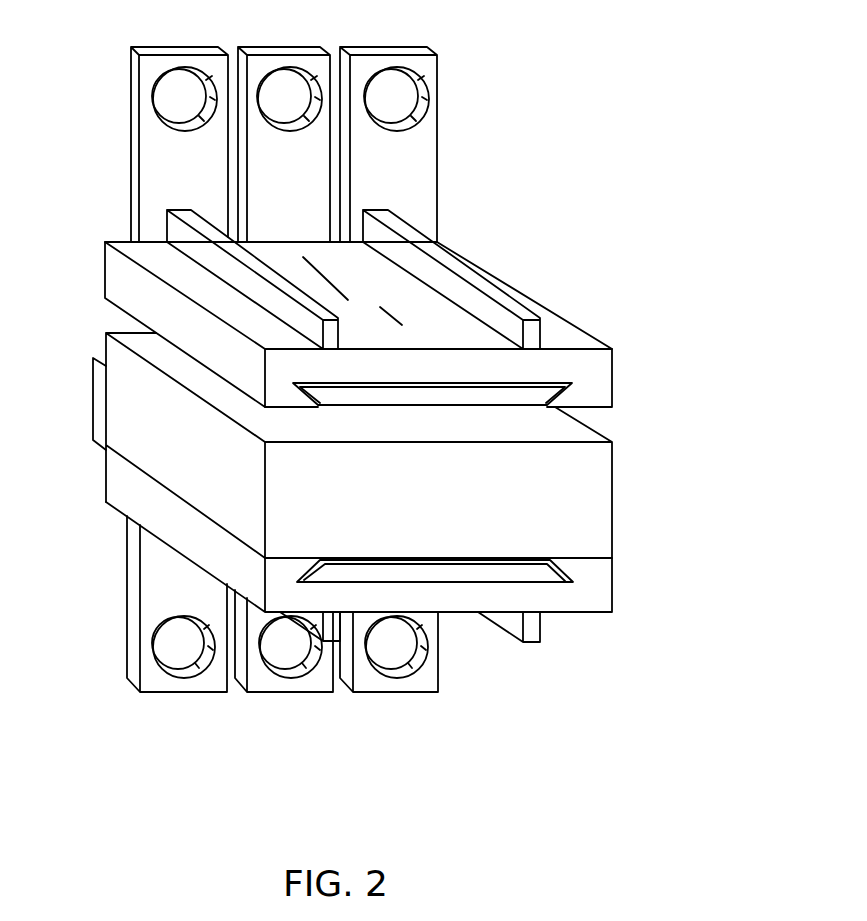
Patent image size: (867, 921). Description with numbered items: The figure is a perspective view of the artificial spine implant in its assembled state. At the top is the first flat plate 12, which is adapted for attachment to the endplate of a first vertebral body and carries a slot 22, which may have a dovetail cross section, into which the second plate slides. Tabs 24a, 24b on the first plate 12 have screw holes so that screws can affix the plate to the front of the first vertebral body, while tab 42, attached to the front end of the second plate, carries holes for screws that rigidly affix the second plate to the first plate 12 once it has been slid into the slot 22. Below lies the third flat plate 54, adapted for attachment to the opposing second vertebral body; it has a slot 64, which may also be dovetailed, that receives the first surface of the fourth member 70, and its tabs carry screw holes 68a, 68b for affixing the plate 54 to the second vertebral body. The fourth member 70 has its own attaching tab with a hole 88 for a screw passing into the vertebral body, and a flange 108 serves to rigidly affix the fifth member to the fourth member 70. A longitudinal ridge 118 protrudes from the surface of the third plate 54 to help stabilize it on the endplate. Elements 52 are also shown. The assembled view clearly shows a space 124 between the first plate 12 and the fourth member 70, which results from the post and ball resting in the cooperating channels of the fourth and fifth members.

The first flat plate 12 is at (369, 382).
The slot 22 is at (546, 392).
The tab 24a is at (200, 44).
The tab 24b is at (352, 44).
The tab 42 is at (293, 44).
The guide rail 52 is at (435, 272).
The third flat plate 54 is at (613, 596).
The slot 64 is at (552, 574).
The screw hole 68a is at (188, 694).
The screw hole 68b is at (402, 694).
The fourth member 70 is at (613, 501).
The hole 88 is at (270, 694).
The flange 108 is at (92, 379).
The longitudinal ridge 118 is at (507, 635).
The space 124 is at (131, 323).